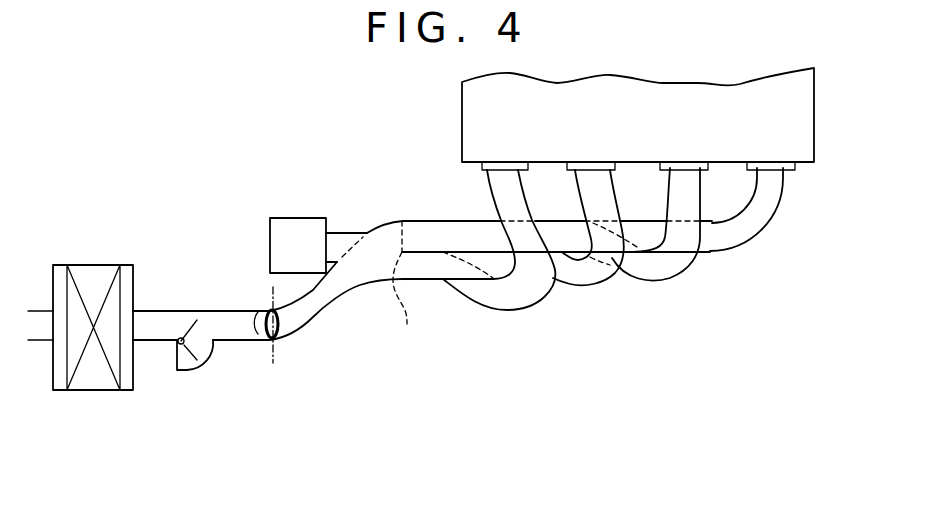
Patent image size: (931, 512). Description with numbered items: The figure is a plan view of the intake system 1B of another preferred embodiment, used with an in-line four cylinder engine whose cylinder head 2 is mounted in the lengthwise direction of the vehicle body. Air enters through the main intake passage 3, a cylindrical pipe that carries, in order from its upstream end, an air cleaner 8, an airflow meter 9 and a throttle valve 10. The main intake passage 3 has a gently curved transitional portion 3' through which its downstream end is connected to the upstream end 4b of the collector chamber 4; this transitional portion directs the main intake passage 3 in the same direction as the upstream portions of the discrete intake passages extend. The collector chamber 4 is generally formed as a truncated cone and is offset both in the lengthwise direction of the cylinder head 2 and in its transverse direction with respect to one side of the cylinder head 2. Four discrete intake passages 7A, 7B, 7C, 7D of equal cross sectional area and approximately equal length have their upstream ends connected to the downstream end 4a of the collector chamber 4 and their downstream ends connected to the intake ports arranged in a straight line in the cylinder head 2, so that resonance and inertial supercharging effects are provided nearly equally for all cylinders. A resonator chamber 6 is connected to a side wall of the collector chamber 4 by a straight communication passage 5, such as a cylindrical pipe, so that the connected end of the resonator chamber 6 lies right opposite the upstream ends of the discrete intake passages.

The intake system 1B is at (277, 172).
The cylinder head 2 is at (814, 107).
The main intake passage 3 is at (268, 341).
The gently curved transitional portion 3' is at (322, 366).
The collector chamber 4 is at (385, 232).
The downstream end of collector chamber 4a is at (551, 288).
The upstream end of collector chamber 4b is at (357, 267).
The communication passage 5 is at (347, 232).
The resonator chamber 6 is at (270, 218).
The first discrete intake passage 7A is at (740, 248).
The second discrete intake passage 7B is at (650, 280).
The third discrete intake passage 7C is at (568, 287).
The fourth discrete intake passage 7D is at (480, 307).
The air cleaner 8 is at (98, 390).
The airflow meter 9 is at (185, 370).
The throttle valve 10 is at (288, 343).